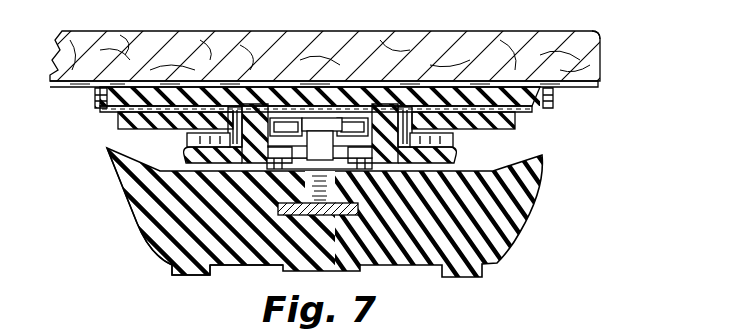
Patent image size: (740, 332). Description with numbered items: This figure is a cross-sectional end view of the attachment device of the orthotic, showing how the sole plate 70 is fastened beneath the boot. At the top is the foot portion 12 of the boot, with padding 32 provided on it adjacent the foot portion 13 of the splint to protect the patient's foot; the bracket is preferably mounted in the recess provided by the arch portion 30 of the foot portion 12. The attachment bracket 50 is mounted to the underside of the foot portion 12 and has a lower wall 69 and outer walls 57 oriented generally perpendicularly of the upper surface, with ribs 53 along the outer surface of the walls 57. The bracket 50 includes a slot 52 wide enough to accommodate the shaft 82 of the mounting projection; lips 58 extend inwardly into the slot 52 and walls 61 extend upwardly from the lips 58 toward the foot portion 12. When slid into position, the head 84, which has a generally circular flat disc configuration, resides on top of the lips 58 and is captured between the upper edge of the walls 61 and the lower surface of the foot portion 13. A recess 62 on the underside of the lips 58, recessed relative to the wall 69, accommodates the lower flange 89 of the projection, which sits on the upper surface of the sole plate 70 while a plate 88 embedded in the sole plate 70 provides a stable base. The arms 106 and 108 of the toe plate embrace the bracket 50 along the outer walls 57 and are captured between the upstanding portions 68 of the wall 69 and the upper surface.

The foot portion 12 is at (605, 65).
The foot portion 13 is at (522, 112).
The arch portion 30 is at (580, 87).
The padding 32 is at (520, 33).
The attachment bracket 50 is at (190, 169).
The slot 52 is at (292, 160).
The ribs 53 is at (197, 113).
The outer walls 57 is at (240, 117).
The lips 58 is at (273, 125).
The walls 61 is at (305, 127).
The recess 62 is at (234, 267).
The upstanding portions 68 is at (190, 145).
The lower wall 69 is at (215, 188).
The sole plate 70 is at (540, 181).
The shaft 82 is at (372, 172).
The head 84 is at (353, 127).
The plate 88 is at (340, 216).
The lower flange 89 is at (158, 254).
The arm 106 is at (115, 124).
The arm 108 is at (518, 126).